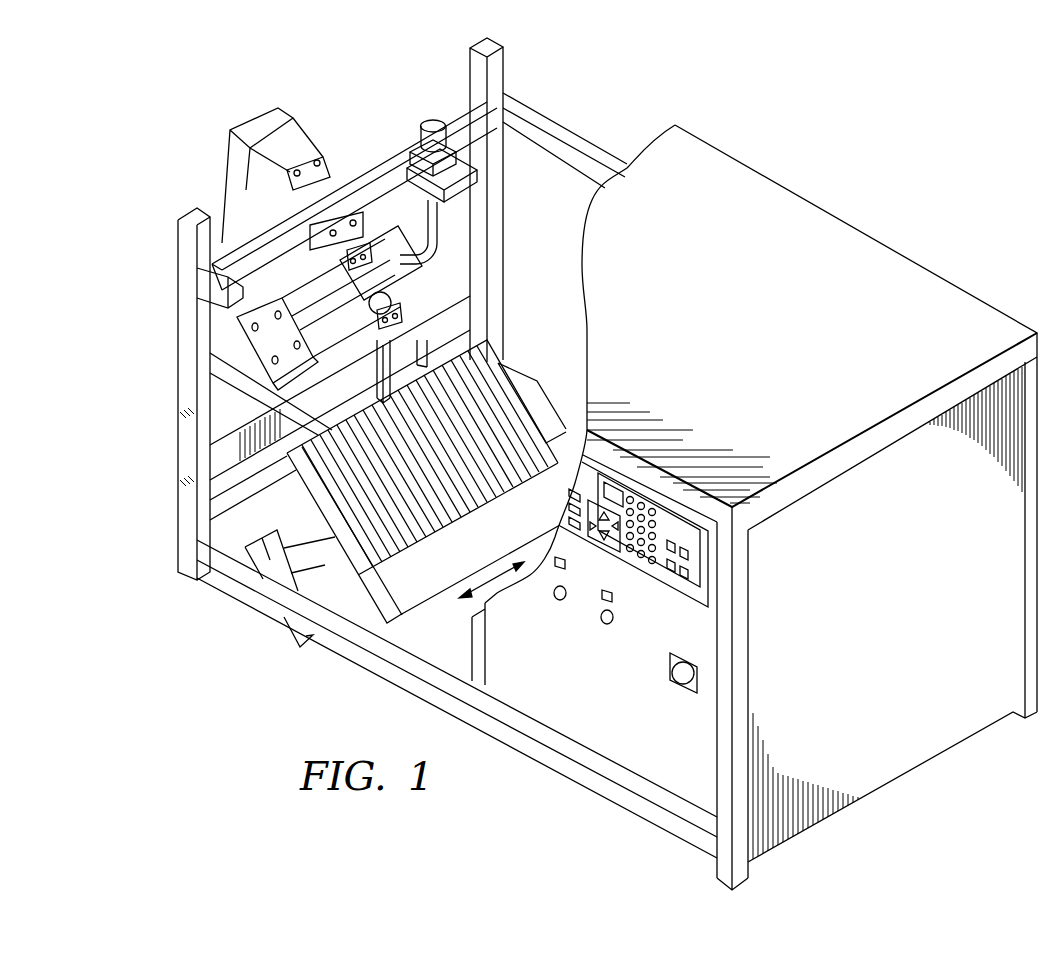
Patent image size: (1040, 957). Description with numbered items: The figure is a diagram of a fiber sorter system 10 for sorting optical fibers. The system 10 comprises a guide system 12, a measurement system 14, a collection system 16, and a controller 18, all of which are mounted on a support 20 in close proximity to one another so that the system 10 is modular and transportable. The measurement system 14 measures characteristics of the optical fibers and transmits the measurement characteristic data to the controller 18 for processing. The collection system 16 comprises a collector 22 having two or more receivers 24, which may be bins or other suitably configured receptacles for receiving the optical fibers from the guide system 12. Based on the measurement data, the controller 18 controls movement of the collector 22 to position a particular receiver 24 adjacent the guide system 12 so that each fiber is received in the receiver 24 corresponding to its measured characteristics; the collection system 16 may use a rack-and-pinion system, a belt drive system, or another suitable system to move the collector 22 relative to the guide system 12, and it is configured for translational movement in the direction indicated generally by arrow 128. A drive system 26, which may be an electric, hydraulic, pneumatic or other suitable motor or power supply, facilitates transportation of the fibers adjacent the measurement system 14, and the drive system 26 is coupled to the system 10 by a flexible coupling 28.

The fiber sorter system 10 is at (822, 154).
The guide system 12 is at (335, 163).
The measurement system 14 is at (266, 390).
The collection system 16 is at (369, 597).
The controller 18 is at (588, 717).
The support 20 is at (181, 514).
The collector 22 is at (353, 572).
The receivers 24 is at (440, 522).
The drive system 26 is at (437, 122).
The flexible coupling 28 is at (427, 218).
The arrow 128 is at (492, 578).